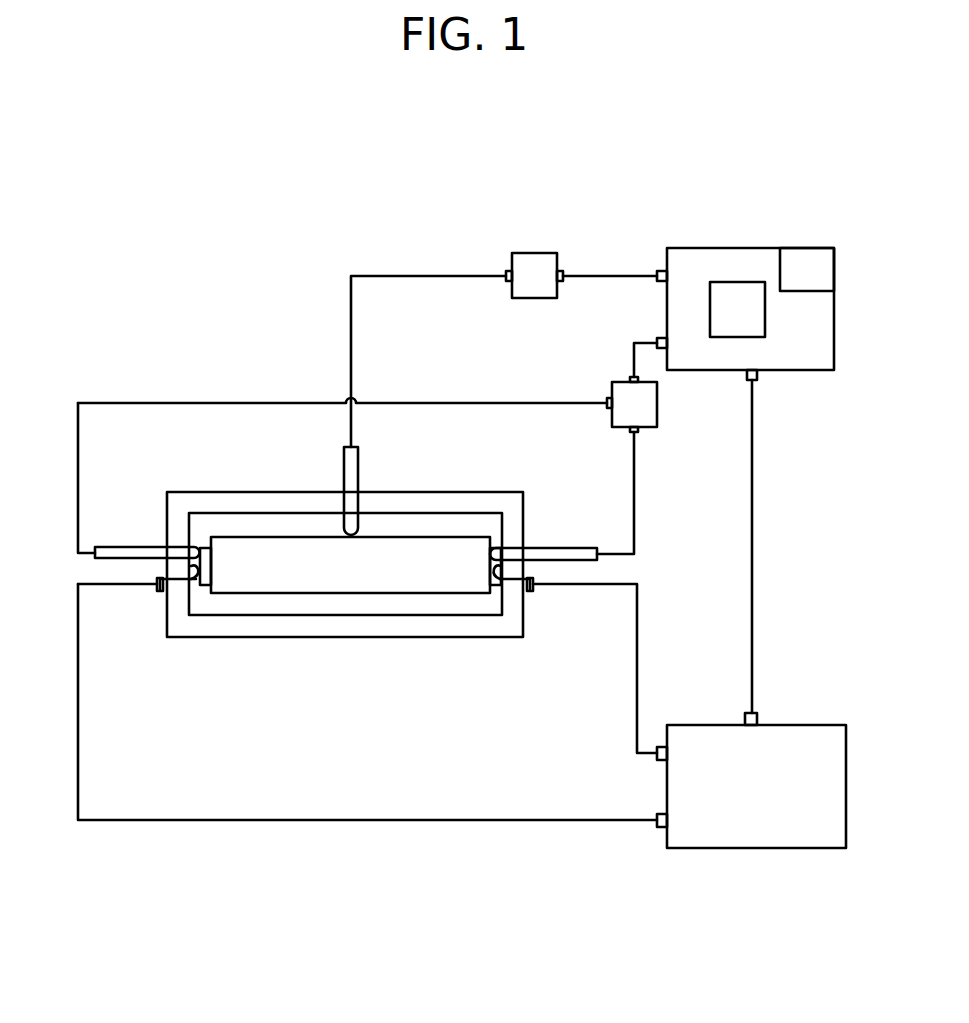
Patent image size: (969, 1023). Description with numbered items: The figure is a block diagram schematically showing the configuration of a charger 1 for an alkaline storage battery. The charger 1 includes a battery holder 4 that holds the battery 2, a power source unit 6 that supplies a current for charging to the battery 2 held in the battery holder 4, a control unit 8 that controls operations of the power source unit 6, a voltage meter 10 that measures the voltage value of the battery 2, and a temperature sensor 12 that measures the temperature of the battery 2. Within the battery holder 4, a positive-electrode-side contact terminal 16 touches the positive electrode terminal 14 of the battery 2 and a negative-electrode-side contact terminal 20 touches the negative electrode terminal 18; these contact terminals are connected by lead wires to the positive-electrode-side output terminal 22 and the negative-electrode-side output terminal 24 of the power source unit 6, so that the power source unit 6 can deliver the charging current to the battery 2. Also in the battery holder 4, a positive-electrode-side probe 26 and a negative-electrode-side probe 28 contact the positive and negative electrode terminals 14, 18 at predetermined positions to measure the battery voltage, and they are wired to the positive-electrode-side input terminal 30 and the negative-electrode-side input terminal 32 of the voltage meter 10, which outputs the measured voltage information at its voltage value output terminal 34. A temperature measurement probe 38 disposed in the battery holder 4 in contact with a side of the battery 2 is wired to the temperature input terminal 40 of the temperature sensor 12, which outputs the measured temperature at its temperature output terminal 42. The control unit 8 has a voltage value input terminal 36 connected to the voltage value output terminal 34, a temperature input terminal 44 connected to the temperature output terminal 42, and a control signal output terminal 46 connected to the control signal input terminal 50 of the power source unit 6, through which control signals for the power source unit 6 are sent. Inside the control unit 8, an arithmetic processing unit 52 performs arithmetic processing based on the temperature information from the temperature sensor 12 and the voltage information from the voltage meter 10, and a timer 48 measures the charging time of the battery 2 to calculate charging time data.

The charger 1 is at (661, 172).
The battery 2 is at (372, 594).
The battery holder 4 is at (195, 492).
The power source unit 6 is at (708, 725).
The control unit 8 is at (703, 248).
The voltage meter 10 is at (657, 404).
The temperature sensor 12 is at (537, 253).
The positive electrode terminal 14 is at (207, 587).
The positive-electrode-side contact terminal 16 is at (180, 590).
The negative electrode terminal 18 is at (496, 587).
The negative-electrode-side contact terminal 20 is at (512, 590).
The positive-electrode-side output terminal 22 is at (657, 823).
The negative-electrode-side output terminal 24 is at (657, 756).
The positive-electrode-side probe 26 is at (124, 546).
The negative-electrode-side probe 28 is at (566, 547).
The positive-electrode-side input terminal 30 is at (607, 402).
The negative-electrode-side input terminal 32 is at (632, 433).
The voltage value output terminal 34 is at (630, 379).
The voltage value input terminal 36 is at (657, 340).
The temperature measurement probe 38 is at (360, 464).
The temperature input terminal 40 is at (506, 272).
The temperature output terminal 42 is at (562, 271).
The temperature input terminal 44 is at (657, 273).
The control signal output terminal 46 is at (758, 376).
The timer 48 is at (804, 262).
The control signal input terminal 50 is at (757, 719).
The arithmetic processing unit 52 is at (740, 282).